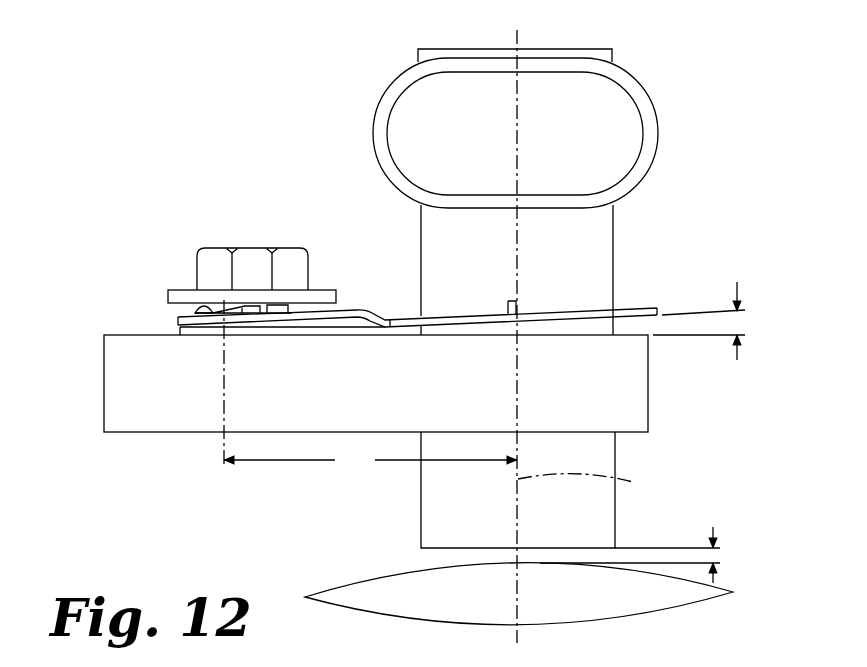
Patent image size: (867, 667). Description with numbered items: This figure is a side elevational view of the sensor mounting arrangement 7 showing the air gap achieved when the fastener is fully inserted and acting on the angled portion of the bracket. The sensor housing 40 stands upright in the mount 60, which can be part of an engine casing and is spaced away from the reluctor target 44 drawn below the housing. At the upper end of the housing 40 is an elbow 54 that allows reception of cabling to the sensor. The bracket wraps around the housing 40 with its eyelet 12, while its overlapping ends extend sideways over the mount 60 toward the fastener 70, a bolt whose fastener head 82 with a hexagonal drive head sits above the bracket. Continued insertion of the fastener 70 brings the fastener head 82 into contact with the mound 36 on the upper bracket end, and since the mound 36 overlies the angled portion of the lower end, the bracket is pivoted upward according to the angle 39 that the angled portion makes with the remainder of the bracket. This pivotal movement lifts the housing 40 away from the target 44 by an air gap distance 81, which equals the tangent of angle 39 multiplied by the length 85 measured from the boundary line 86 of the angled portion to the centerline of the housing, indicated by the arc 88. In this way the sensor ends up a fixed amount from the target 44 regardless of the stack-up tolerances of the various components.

The sensor mounting arrangement 7 is at (291, 173).
The eyelet 12 is at (435, 313).
The mound 36 is at (195, 312).
The angle 39 is at (740, 322).
The sensor housing 40 is at (614, 250).
The reluctor target 44 is at (392, 577).
The elbow 54 is at (658, 132).
The mount 60 is at (104, 363).
The fastener 70 is at (202, 246).
The air gap distance 81 is at (713, 557).
The fastener head 82 is at (172, 290).
The center distance 85 is at (370, 460).
The boundary line 86 is at (220, 437).
The arc path 88 is at (590, 486).